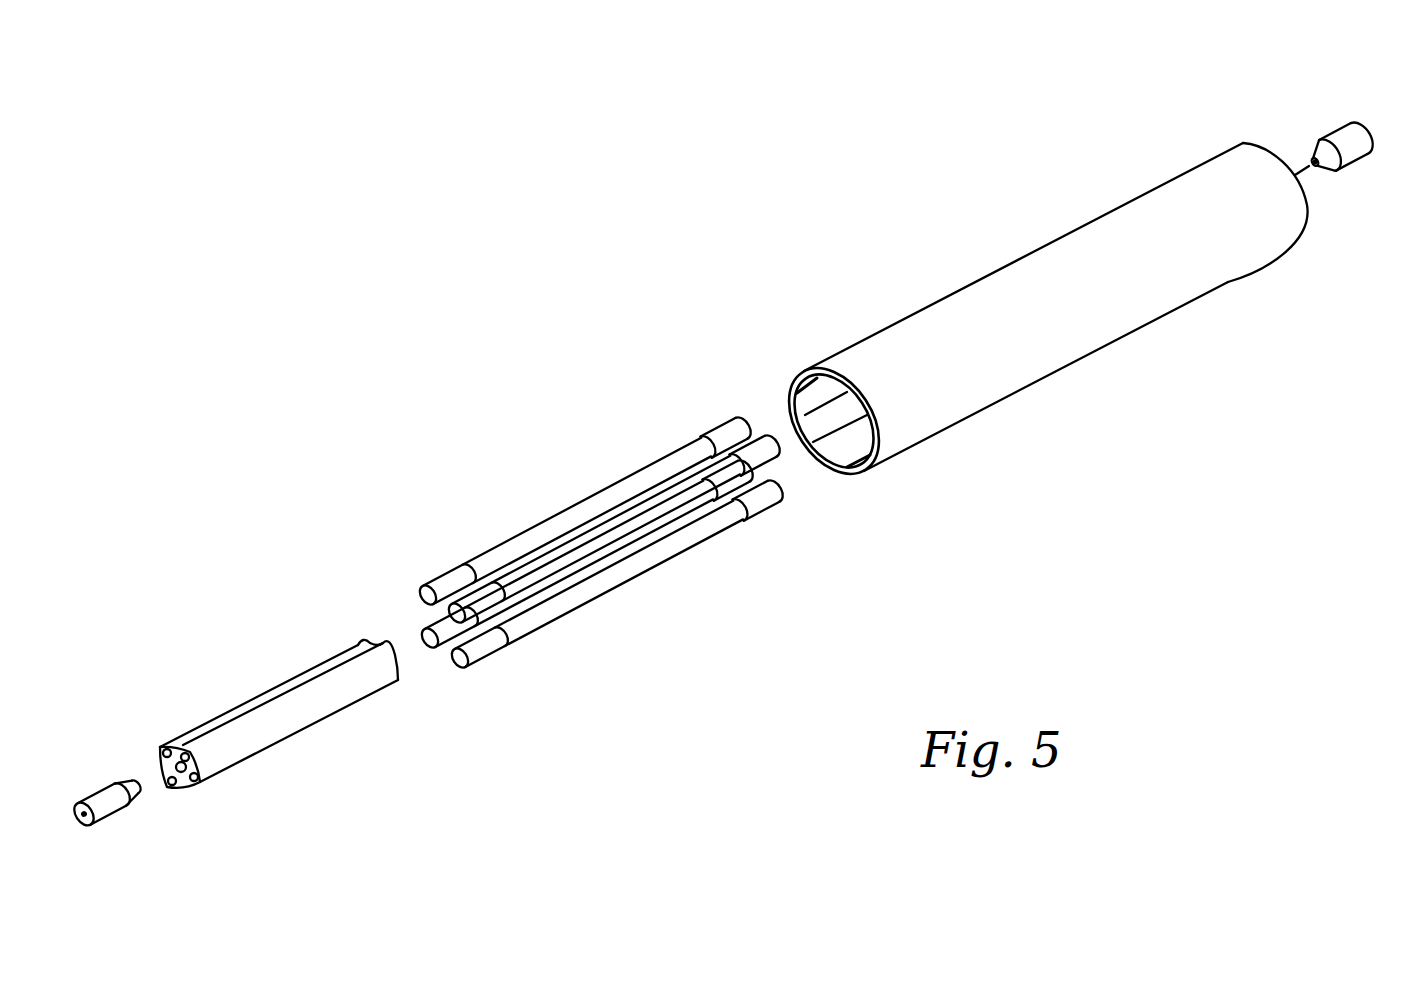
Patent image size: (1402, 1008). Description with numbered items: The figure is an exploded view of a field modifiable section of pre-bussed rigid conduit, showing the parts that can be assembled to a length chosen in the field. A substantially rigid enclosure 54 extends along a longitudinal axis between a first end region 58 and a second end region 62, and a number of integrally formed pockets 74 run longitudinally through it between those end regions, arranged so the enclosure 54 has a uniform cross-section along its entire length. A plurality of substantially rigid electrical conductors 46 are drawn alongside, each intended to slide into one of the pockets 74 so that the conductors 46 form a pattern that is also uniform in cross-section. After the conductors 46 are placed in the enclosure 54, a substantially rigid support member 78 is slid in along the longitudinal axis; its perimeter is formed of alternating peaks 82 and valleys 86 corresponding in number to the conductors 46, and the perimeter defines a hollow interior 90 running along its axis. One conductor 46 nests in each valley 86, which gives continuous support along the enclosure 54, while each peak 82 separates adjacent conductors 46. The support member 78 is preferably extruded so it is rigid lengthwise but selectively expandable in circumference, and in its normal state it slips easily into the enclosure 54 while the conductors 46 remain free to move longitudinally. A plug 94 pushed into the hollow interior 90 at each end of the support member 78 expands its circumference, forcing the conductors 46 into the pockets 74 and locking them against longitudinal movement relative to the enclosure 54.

The electrical conductors 46 is at (652, 482).
The enclosure 54 is at (1034, 317).
The first end region 58 is at (817, 365).
The second end region 62 is at (1203, 162).
The pockets 74 is at (808, 441).
The support member 78 is at (259, 737).
The peaks 82 is at (170, 788).
The valleys 86 is at (188, 787).
The hollow interior 90 is at (162, 758).
The plug 94 is at (110, 806).